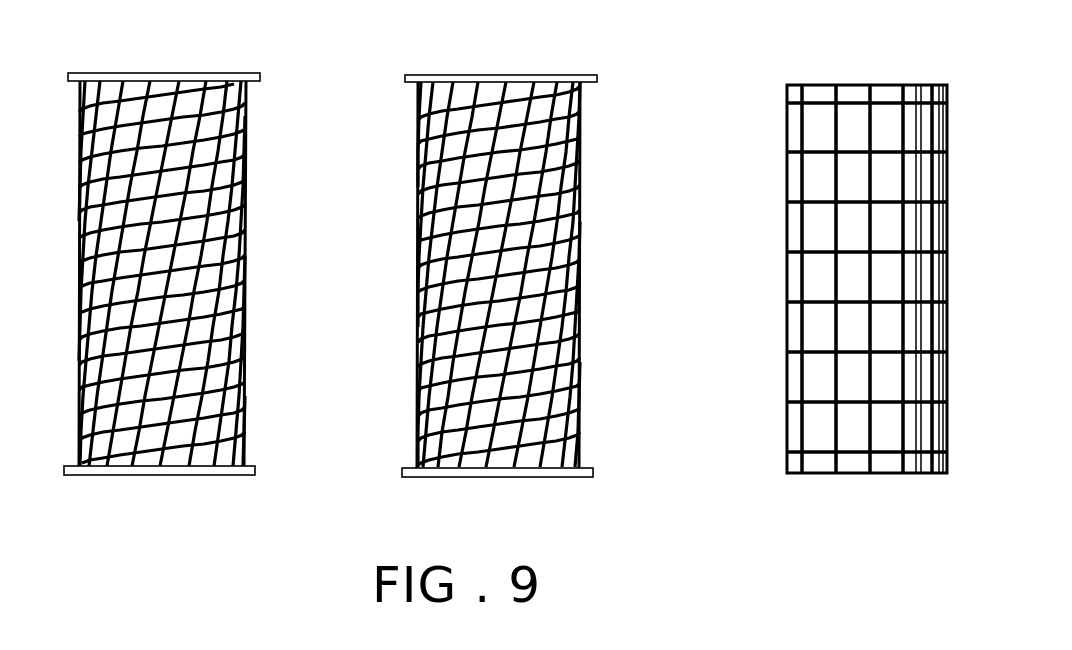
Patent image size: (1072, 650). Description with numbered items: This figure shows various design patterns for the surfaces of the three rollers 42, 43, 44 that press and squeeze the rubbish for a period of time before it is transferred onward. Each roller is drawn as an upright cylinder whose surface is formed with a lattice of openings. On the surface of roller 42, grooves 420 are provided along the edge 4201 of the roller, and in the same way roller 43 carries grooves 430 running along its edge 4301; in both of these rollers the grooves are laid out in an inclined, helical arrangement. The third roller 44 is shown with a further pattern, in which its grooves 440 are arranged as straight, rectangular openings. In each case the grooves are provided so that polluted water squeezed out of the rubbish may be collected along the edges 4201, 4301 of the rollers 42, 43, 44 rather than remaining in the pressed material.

The roller 42 is at (192, 244).
The groove 420 is at (107, 102).
The edge 4201 is at (185, 100).
The roller 43 is at (528, 246).
The groove 430 is at (443, 93).
The edge 4301 is at (508, 93).
The roller 44 is at (902, 246).
The groove 440 is at (838, 90).